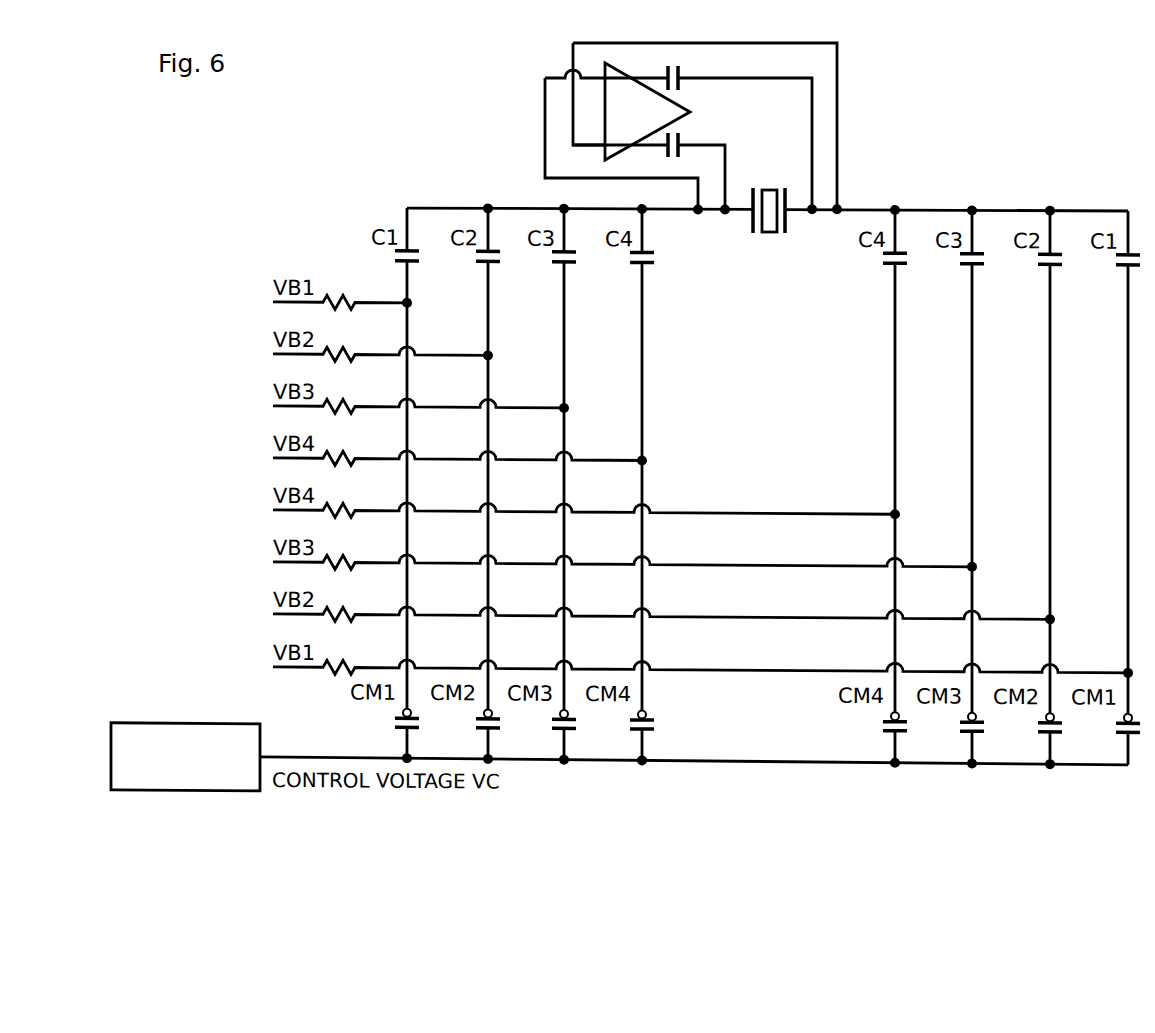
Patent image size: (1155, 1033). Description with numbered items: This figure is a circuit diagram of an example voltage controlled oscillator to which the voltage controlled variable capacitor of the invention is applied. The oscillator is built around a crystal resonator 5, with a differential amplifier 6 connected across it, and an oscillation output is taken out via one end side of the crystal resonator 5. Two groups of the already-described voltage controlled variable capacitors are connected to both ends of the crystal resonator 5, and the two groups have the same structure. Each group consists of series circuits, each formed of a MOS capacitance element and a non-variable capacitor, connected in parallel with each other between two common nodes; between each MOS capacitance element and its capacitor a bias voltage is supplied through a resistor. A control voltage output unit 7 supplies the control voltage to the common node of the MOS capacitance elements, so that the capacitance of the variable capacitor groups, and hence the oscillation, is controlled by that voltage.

The crystal resonator 5 is at (771, 233).
The differential amplifier 6 is at (682, 102).
The control voltage output unit 7 is at (148, 721).